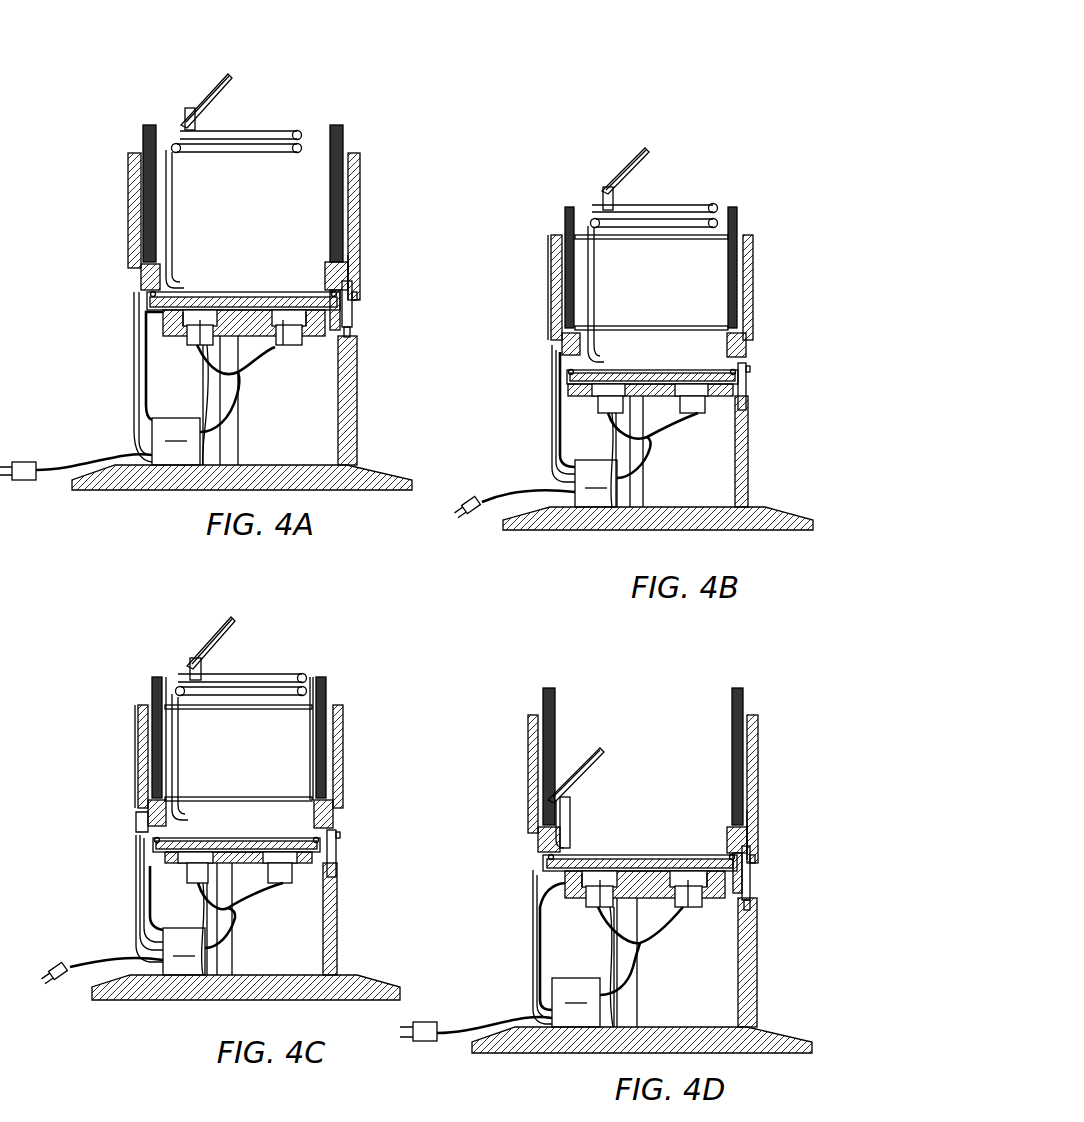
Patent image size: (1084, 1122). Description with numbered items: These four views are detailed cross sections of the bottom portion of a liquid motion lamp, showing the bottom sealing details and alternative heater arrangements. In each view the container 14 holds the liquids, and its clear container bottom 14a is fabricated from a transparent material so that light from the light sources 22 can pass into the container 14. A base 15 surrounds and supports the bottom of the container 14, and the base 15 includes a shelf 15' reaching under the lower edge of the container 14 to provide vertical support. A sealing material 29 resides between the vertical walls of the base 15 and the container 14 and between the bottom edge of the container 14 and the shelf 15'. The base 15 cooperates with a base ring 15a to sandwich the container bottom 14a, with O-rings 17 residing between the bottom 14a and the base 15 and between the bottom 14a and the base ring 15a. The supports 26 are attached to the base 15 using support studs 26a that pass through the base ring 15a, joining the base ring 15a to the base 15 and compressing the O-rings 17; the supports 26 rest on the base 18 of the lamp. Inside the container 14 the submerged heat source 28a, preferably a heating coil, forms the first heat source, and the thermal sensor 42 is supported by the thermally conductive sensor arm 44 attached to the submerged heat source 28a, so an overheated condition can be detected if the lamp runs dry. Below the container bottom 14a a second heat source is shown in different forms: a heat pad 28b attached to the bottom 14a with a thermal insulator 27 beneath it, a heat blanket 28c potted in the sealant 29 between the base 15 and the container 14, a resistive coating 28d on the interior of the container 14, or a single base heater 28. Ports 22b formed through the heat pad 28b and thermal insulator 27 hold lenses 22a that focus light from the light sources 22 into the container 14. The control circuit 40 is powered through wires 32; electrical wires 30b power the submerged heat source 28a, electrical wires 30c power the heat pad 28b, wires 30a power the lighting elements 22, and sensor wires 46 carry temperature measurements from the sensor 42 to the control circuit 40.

In FIG. 4A, the container 14 is at (150, 135).
In FIG. 4B, the container 14 is at (568, 222).
In FIG. 4C, the container 14 is at (155, 690).
In FIG. 4D, the container 14 is at (550, 702).
In FIG. 4A, the container bottom 14a is at (245, 300).
In FIG. 4B, the container bottom 14a is at (657, 372).
In FIG. 4C, the container bottom 14a is at (246, 840).
In FIG. 4D, the container bottom 14a is at (665, 858).
In FIG. 4A, the base 15 is at (379, 226).
In FIG. 4B, the base 15 is at (653, 287).
In FIG. 4C, the base 15 is at (240, 756).
In FIG. 4D, the base 15 is at (779, 789).
In FIG. 4A, the shelf 15' is at (321, 252).
In FIG. 4D, the shelf 15' is at (720, 813).
In FIG. 4A, the base ring 15a is at (355, 315).
In FIG. 4B, the base ring 15a is at (748, 385).
In FIG. 4C, the base ring 15a is at (336, 855).
In FIG. 4D, the base ring 15a is at (752, 875).
In FIG. 4A, the O-rings 17 is at (325, 292).
In FIG. 4B, the O-rings 17 is at (745, 355).
In FIG. 4C, the O-rings 17 is at (330, 820).
In FIG. 4D, the O-rings 17 is at (727, 855).
In FIG. 4B, the base 18 is at (732, 513).
In FIG. 4C, the base 18 is at (320, 983).
In FIG. 4A, the light sources 22 is at (275, 347).
In FIG. 4B, the light sources 22 is at (693, 408).
In FIG. 4C, the light sources 22 is at (282, 876).
In FIG. 4D, the light sources 22 is at (680, 907).
In FIG. 4A, the lenses 22a is at (200, 335).
In FIG. 4D, the lenses 22a is at (600, 895).
In FIG. 4A, the ports 22b is at (182, 330).
In FIG. 4D, the ports 22b is at (582, 888).
In FIG. 4B, the supports 26 is at (745, 448).
In FIG. 4C, the supports 26 is at (330, 915).
In FIG. 4A, the support studs 26a is at (357, 296).
In FIG. 4B, the support studs 26a is at (750, 368).
In FIG. 4C, the support studs 26a is at (340, 835).
In FIG. 4D, the support studs 26a is at (755, 858).
In FIG. 4A, the thermal insulator 27 is at (320, 328).
In FIG. 4B, the thermal insulator 27 is at (653, 397).
In FIG. 4C, the thermal insulator 27 is at (243, 865).
In FIG. 4D, the thermal insulator 27 is at (718, 892).
In FIG. 4D, the guide 28 is at (750, 892).
In FIG. 4A, the submerged heat source 28a is at (253, 133).
In FIG. 4B, the submerged heat source 28a is at (672, 207).
In FIG. 4C, the submerged heat source 28a is at (256, 676).
In FIG. 4A, the heat pad 28b is at (350, 330).
In FIG. 4B, the heat blanket 28c is at (565, 258).
In FIG. 4C, the guide rod 28d is at (166, 686).
In FIG. 4A, the sealing material 29 is at (134, 175).
In FIG. 4B, the sealing material 29 is at (556, 280).
In FIG. 4C, the sealing material 29 is at (140, 775).
In FIG. 4D, the sealing material 29 is at (533, 758).
In FIG. 4A, the wires 30a is at (203, 465).
In FIG. 4B, the wires 30a is at (612, 507).
In FIG. 4C, the wires 30a is at (203, 975).
In FIG. 4D, the wires 30a is at (613, 1027).
In FIG. 4A, the electrical wires 30b is at (146, 322).
In FIG. 4B, the electrical wires 30b is at (564, 405).
In FIG. 4C, the electrical wires 30b is at (151, 870).
In FIG. 4D, the electrical wires 30b is at (540, 912).
In FIG. 4A, the electrical wires 30c is at (137, 380).
In FIG. 4B, the electrical wires 30c is at (554, 362).
In FIG. 4C, the electrical wires 30c is at (140, 832).
In FIG. 4A, the wires 32 is at (58, 482).
In FIG. 4B, the wires 32 is at (492, 498).
In FIG. 4C, the wires 32 is at (82, 962).
In FIG. 4D, the wires 32 is at (462, 1042).
In FIG. 4A, the control circuit 40 is at (176, 441).
In FIG. 4B, the control circuit 40 is at (596, 483).
In FIG. 4C, the control circuit 40 is at (184, 951).
In FIG. 4D, the control circuit 40 is at (576, 1002).
In FIG. 4A, the thermal sensor 42 is at (226, 78).
In FIG. 4B, the thermal sensor 42 is at (637, 158).
In FIG. 4C, the thermal sensor 42 is at (226, 628).
In FIG. 4D, the thermal sensor 42 is at (600, 748).
In FIG. 4A, the sensor arm 44 is at (196, 120).
In FIG. 4B, the sensor arm 44 is at (614, 198).
In FIG. 4C, the sensor arm 44 is at (202, 666).
In FIG. 4D, the sensor arm 44 is at (566, 797).
In FIG. 4A, the sensor wires 46 is at (175, 145).
In FIG. 4B, the sensor wires 46 is at (592, 215).
In FIG. 4C, the sensor wires 46 is at (178, 685).
In FIG. 4D, the sensor wires 46 is at (572, 815).